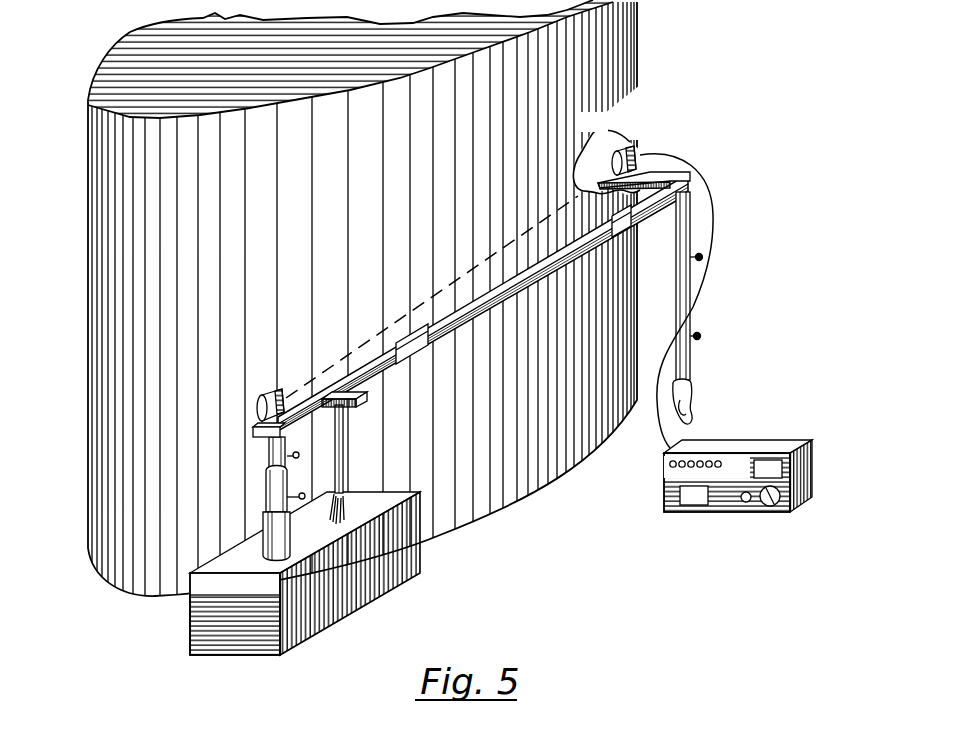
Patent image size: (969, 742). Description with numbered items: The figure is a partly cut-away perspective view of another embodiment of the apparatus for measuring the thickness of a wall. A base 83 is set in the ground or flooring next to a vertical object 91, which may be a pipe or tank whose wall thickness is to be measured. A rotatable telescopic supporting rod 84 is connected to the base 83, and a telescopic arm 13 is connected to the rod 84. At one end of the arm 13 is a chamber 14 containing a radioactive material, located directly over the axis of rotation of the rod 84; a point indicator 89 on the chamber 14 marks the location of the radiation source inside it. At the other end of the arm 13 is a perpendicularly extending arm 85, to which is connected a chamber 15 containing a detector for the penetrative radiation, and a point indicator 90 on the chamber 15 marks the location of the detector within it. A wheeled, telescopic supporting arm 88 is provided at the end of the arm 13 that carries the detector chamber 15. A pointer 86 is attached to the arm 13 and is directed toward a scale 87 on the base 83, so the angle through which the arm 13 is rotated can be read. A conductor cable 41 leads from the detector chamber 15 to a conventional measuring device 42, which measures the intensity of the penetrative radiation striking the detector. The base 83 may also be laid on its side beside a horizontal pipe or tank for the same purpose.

The telescopic arm 13 is at (447, 327).
The chamber containing a radioactive material 14 is at (287, 398).
The chamber containing a detector 15 is at (632, 150).
The conductor cable 41 is at (713, 245).
The measuring device 42 is at (668, 482).
The base 83 is at (418, 528).
The rotatable telescopic supporting rod 84 is at (273, 494).
The perpendicularly extending arm 85 is at (658, 177).
The pointer 86 is at (342, 457).
The scale 87 is at (340, 522).
The wheeled telescopic supporting arm 88 is at (684, 198).
The point indicator 89 is at (268, 392).
The point indicator 90 is at (615, 136).
The vertical object 91 is at (603, 440).